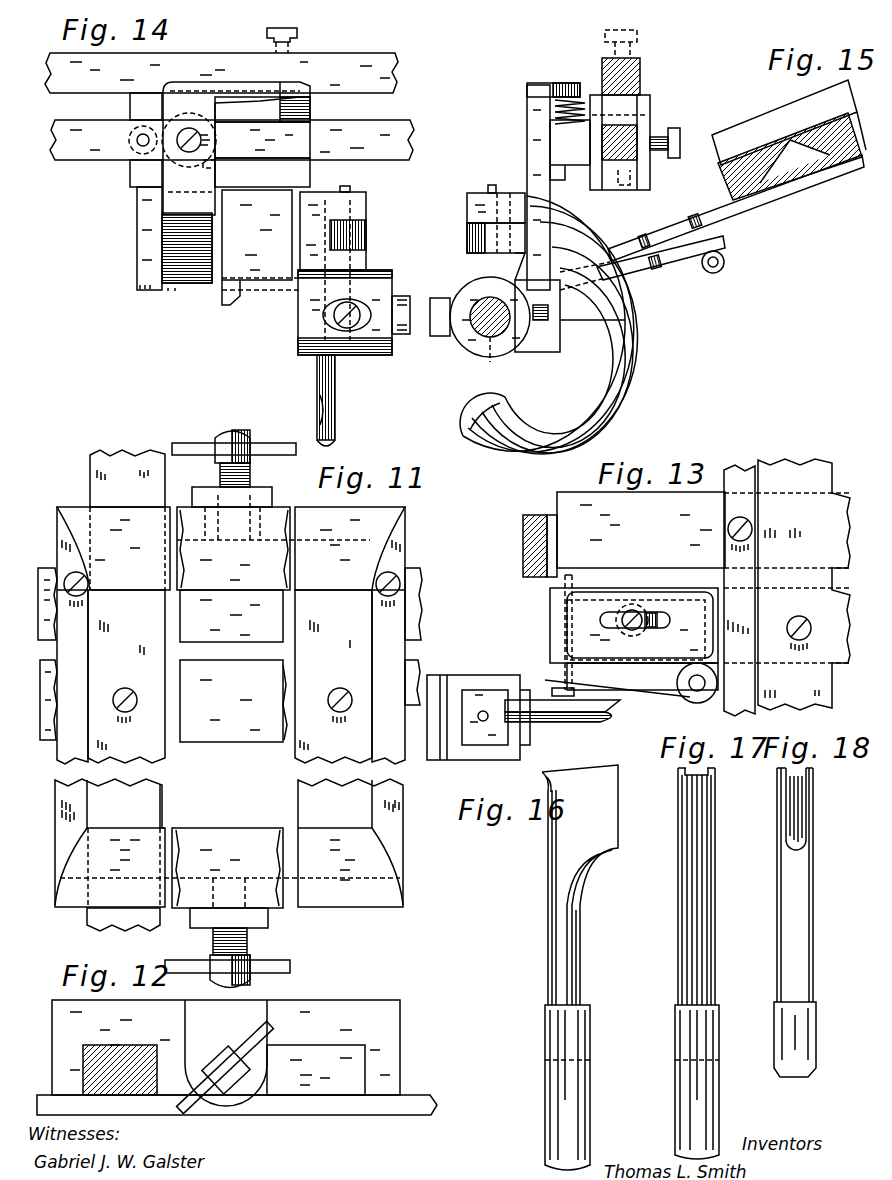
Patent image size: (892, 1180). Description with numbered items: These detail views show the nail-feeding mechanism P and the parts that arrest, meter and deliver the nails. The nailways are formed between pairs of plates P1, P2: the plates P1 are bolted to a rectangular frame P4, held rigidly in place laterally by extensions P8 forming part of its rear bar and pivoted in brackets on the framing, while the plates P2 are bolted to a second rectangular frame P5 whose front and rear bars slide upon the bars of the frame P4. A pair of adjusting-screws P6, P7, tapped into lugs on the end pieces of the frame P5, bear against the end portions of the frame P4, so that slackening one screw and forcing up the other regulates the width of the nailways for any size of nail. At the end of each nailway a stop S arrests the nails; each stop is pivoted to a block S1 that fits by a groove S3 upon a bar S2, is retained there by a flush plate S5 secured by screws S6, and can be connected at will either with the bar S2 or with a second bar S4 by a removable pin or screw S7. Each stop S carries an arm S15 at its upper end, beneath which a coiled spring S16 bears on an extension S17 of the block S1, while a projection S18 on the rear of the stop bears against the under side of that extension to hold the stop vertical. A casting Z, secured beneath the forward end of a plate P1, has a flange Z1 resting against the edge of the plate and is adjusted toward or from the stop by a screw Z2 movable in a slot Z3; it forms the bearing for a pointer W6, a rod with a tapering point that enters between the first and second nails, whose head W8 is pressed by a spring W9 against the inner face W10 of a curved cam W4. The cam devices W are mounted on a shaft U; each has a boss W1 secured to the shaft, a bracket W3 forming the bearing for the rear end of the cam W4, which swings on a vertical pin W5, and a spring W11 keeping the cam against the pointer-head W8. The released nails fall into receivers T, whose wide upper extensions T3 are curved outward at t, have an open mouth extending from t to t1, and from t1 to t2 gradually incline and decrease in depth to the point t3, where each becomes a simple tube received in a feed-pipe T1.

In FIG. 14, the stop S is at (236, 148).
In FIG. 15, the stop S is at (577, 187).
In FIG. 13, the stop S is at (523, 550).
In FIG. 14, the block S1 is at (220, 140).
In FIG. 15, the block S1 is at (616, 127).
In FIG. 14, the bar S2 is at (232, 140).
In FIG. 15, the bar S2 is at (650, 118).
In FIG. 15, the groove S3 is at (646, 182).
In FIG. 14, the bar S4 is at (221, 73).
In FIG. 15, the bar S4 is at (632, 73).
In FIG. 14, the flush plate S5 is at (146, 173).
In FIG. 15, the flush plate S5 is at (653, 86).
In FIG. 15, the screw S6 is at (667, 138).
In FIG. 14, the removable pin or screw S7 is at (213, 78).
In FIG. 15, the removable pin or screw S7 is at (654, 82).
In FIG. 14, the arm S15 is at (274, 79).
In FIG. 15, the arm S15 is at (553, 79).
In FIG. 14, the spring S16 is at (262, 109).
In FIG. 15, the spring S16 is at (582, 99).
In FIG. 14, the extension S17 is at (262, 140).
In FIG. 15, the extension S17 is at (570, 142).
In FIG. 14, the projection S18 is at (215, 164).
In FIG. 15, the projection S18 is at (566, 181).
In FIG. 14, the cam device W is at (331, 312).
In FIG. 15, the cam device W is at (559, 325).
In FIG. 14, the boss W1 is at (345, 360).
In FIG. 15, the boss W1 is at (527, 310).
In FIG. 13, the boss W1 is at (478, 729).
In FIG. 14, the bracket W3 is at (366, 208).
In FIG. 15, the bracket W3 is at (467, 208).
In FIG. 14, the curved cam W4 is at (366, 240).
In FIG. 15, the curved cam W4 is at (502, 414).
In FIG. 13, the curved cam W4 is at (558, 724).
In FIG. 14, the vertical pin W5 is at (348, 178).
In FIG. 15, the vertical pin W5 is at (482, 178).
In FIG. 14, the pointer W6 is at (240, 297).
In FIG. 15, the pointer W6 is at (605, 284).
In FIG. 13, the pointer W6 is at (563, 622).
In FIG. 13, the knob or head W8 is at (552, 690).
In FIG. 13, the spring W9 is at (609, 686).
In FIG. 14, the inner face W10 is at (318, 392).
In FIG. 13, the inner face W10 is at (563, 698).
In FIG. 15, the spring W11 is at (707, 270).
In FIG. 15, the shaft U is at (490, 358).
In FIG. 15, the nail-feeding mechanism P is at (784, 122).
In FIG. 11, the nail-feeding mechanism P is at (66, 748).
In FIG. 12, the nail-feeding mechanism P is at (237, 1119).
In FIG. 13, the nail-feeding mechanism P is at (787, 577).
In FIG. 11, the plate P1 is at (33, 700).
In FIG. 12, the plate P1 is at (224, 1070).
In FIG. 13, the plate P1 is at (634, 625).
In FIG. 11, the plate P2 is at (146, 614).
In FIG. 13, the plate P2 is at (641, 541).
In FIG. 15, the rectangular frame P4 is at (818, 165).
In FIG. 11, the rectangular frame P4 is at (230, 676).
In FIG. 13, the rectangular frame P4 is at (804, 584).
In FIG. 15, the rectangular frame P5 is at (753, 193).
In FIG. 11, the rectangular frame P5 is at (378, 748).
In FIG. 12, the rectangular frame P5 is at (226, 1047).
In FIG. 13, the rectangular frame P5 is at (737, 613).
In FIG. 11, the adjusting-screw P6 is at (230, 701).
In FIG. 12, the adjusting-screw P7 is at (225, 1067).
In FIG. 11, the extension P8 is at (117, 689).
In FIG. 13, the casting Z is at (693, 595).
In FIG. 13, the flange Z1 is at (643, 668).
In FIG. 13, the screw Z2 is at (636, 610).
In FIG. 13, the slot Z3 is at (648, 617).
In FIG. 16, the receiver T is at (574, 897).
In FIG. 17, the receiver T is at (706, 886).
In FIG. 18, the receiver T is at (806, 885).
In FIG. 16, the feed-pipe T1 is at (578, 1087).
In FIG. 17, the feed-pipe T1 is at (708, 1082).
In FIG. 18, the feed-pipe T1 is at (808, 1039).
In FIG. 16, the wide extension T3 is at (580, 835).
In FIG. 16, the outward curve t is at (540, 776).
In FIG. 17, the outward curve t is at (696, 767).
In FIG. 18, the outward curve t is at (796, 769).
In FIG. 16, the mouth end t1 is at (629, 758).
In FIG. 17, the mouth end t1 is at (697, 759).
In FIG. 18, the mouth end t1 is at (797, 759).
In FIG. 16, the incline point t2 is at (631, 846).
In FIG. 16, the tube point t3 is at (589, 927).
In FIG. 18, the tube point t3 is at (796, 838).